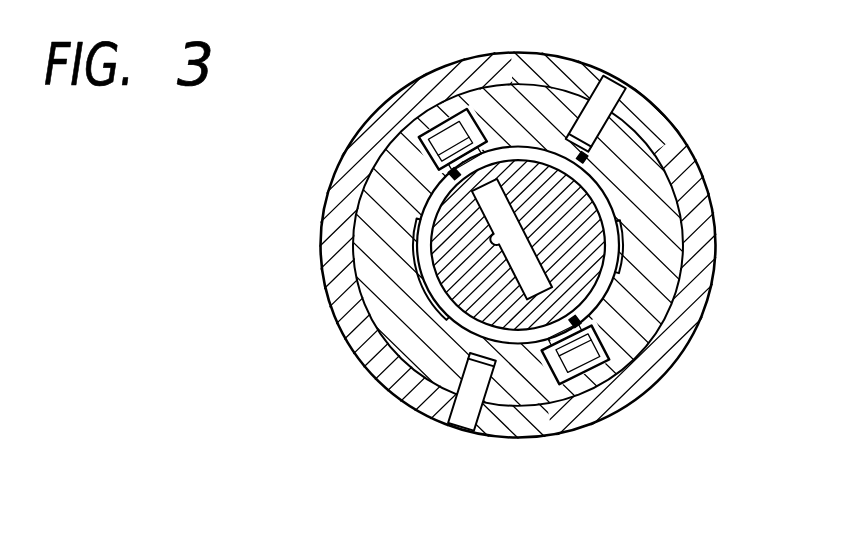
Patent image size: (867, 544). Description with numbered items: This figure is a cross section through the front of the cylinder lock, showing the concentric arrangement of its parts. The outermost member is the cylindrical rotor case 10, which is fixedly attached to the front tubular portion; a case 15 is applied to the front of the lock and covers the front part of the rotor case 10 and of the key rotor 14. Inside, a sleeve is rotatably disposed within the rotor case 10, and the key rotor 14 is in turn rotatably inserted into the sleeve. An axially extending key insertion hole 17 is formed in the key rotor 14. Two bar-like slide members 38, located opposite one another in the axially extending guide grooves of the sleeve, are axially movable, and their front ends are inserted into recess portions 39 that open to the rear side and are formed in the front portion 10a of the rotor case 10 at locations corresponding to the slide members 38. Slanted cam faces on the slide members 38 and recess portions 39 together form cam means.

The rotor case 10 is at (690, 246).
The front portion of the rotor case 10a is at (665, 292).
The key rotor 14 is at (587, 213).
The case 15 is at (337, 163).
The key insertion hole 17 is at (505, 250).
The slide members 38 is at (436, 128).
The recess portions 39 is at (463, 105).